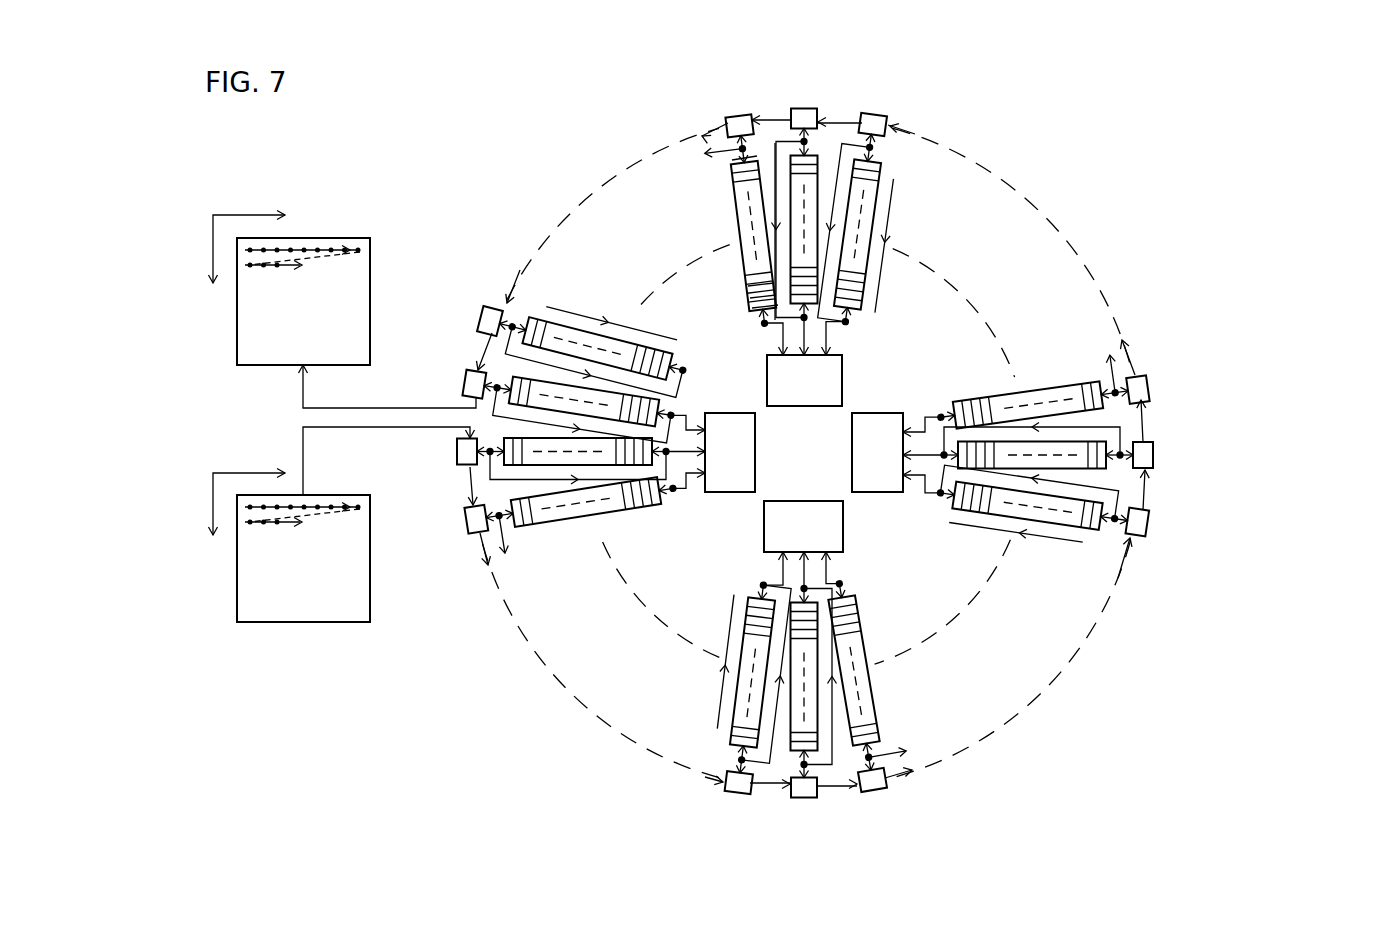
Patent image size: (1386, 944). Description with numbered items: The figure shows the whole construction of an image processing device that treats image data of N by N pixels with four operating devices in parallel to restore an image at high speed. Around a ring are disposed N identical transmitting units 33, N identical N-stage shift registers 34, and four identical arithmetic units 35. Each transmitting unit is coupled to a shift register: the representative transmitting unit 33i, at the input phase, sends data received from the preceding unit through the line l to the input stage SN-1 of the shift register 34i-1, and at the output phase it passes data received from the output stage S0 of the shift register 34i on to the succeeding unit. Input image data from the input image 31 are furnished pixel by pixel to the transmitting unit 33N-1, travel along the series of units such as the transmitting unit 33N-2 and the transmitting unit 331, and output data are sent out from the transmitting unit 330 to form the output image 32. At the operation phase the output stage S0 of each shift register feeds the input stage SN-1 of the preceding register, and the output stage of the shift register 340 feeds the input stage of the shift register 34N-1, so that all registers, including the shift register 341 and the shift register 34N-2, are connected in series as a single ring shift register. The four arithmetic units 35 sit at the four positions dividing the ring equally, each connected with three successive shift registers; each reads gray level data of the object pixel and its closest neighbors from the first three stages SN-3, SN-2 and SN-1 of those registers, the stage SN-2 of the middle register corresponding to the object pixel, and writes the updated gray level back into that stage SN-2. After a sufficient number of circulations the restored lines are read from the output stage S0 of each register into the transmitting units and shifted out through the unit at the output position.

The input image 31 is at (300, 623).
The output image 32 is at (343, 238).
The transmitting unit 33 is at (1156, 387).
The transmitting unit 331 is at (485, 313).
The transmitting unit 330 is at (465, 386).
The transmitting unit 33N-1 is at (458, 452).
The transmitting unit 33N-2 is at (466, 524).
The transmitting unit 33i is at (803, 108).
The shift register 34 is at (1100, 382).
The shift register 341 is at (596, 352).
The shift register 340 is at (512, 382).
The shift register 34N-1 is at (505, 462).
The shift register 34N-2 is at (562, 522).
The shift register 34i is at (817, 158).
The shift register 34i-1 is at (738, 236).
The arithmetic unit 35 is at (845, 375).
The line l is at (774, 150).
The output stage S0 is at (733, 168).
The stage SN-3 is at (748, 290).
The stage SN-2 is at (752, 304).
The input stage SN-1 is at (764, 318).